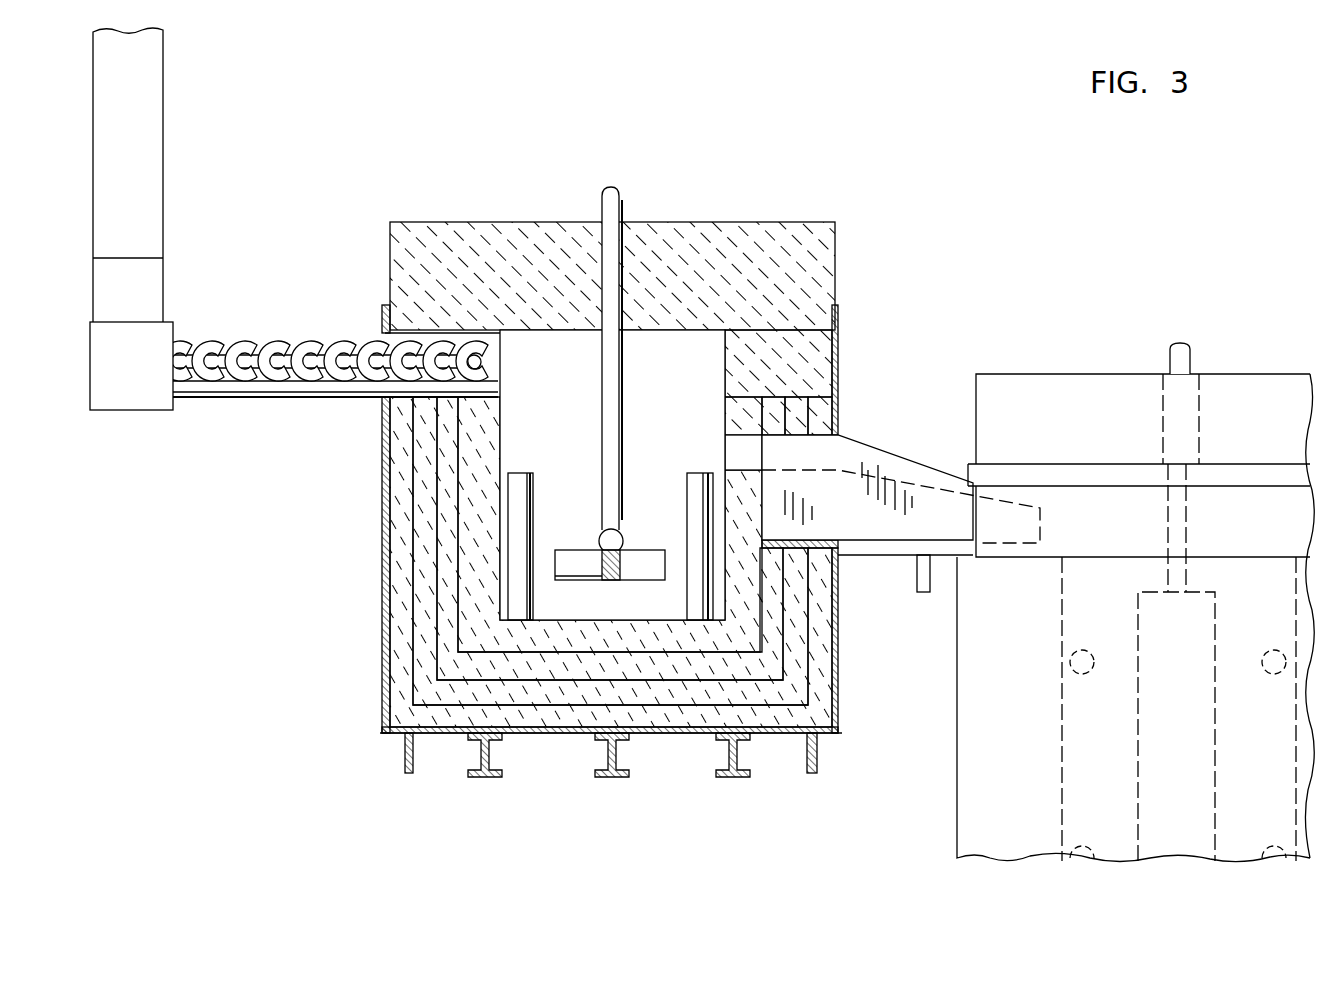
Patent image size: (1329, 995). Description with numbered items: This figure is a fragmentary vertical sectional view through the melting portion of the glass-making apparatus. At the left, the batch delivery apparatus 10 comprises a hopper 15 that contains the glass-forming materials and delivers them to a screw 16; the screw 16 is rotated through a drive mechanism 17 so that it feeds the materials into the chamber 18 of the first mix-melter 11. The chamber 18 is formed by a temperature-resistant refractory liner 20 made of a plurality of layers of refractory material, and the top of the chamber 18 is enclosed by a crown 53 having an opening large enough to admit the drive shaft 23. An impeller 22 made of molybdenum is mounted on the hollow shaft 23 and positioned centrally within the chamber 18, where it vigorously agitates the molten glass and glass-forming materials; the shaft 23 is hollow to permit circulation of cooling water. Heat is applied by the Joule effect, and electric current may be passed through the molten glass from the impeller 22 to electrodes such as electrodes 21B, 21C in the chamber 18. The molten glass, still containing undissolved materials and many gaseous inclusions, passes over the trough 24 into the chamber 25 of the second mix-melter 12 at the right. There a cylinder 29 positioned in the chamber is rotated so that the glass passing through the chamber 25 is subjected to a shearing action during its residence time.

The batch delivery apparatus 10 is at (294, 244).
The first mix-melter 11 is at (683, 473).
The second mix-melter 12 is at (1135, 574).
The hopper 15 is at (172, 87).
The screw 16 is at (256, 338).
The drive mechanism 17 is at (124, 416).
The chamber 18 is at (503, 448).
The refractory liner 20 is at (452, 575).
The electrode 21B is at (530, 622).
The electrode 21C is at (694, 474).
The impeller 22 is at (640, 552).
The shaft 23 is at (601, 198).
The trough 24 is at (876, 447).
The chamber 25 is at (1062, 712).
The cylinder 29 is at (1138, 731).
The crown 53 is at (398, 228).